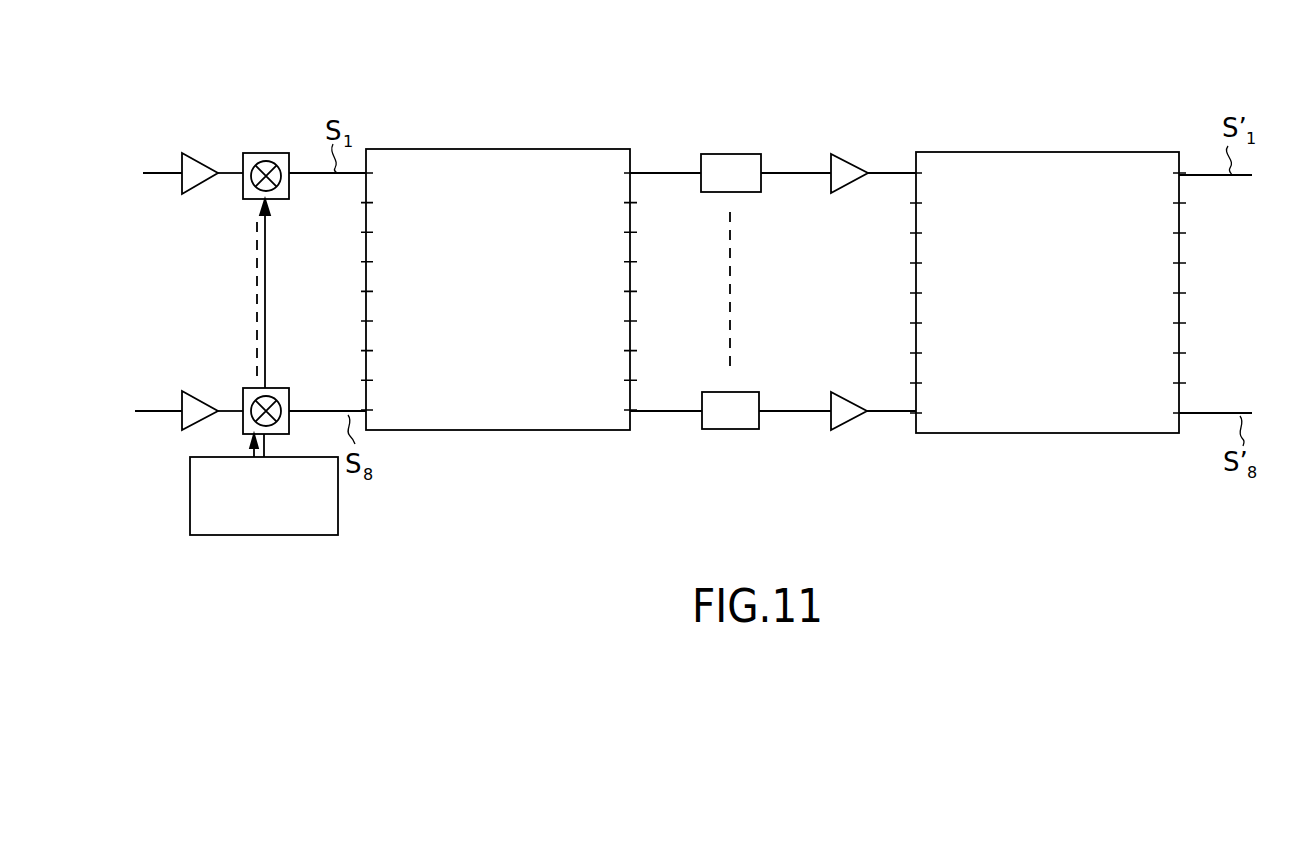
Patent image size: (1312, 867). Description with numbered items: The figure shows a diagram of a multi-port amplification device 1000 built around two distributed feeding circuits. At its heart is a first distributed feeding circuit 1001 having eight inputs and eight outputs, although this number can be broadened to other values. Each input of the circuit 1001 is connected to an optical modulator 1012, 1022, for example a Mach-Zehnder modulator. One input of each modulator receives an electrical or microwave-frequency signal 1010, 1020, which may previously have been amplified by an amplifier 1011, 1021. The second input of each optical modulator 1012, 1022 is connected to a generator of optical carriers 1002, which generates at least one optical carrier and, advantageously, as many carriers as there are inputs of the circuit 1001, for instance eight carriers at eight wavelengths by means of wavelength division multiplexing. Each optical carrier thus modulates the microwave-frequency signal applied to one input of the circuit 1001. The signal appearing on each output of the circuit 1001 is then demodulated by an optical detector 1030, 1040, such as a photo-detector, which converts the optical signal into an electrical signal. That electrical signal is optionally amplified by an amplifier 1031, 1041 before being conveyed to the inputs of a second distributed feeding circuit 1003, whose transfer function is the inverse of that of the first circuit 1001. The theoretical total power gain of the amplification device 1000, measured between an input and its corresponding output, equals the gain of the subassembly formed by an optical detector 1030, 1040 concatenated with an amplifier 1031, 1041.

The multi-port amplification device 1000 is at (1156, 74).
The first distributed feeding circuit 1001 is at (538, 297).
The generator of optical carriers 1002 is at (292, 508).
The second distributed feeding circuit 1003 is at (1088, 300).
The electrical or microwave-frequency signal 1010 is at (147, 172).
The amplifier 1011 is at (205, 168).
The optical modulator 1012 is at (272, 152).
The electrical or microwave-frequency signal 1020 is at (138, 409).
The amplifier 1021 is at (203, 406).
The optical modulator 1022 is at (282, 388).
The optical detector 1030 is at (732, 154).
The amplifier 1031 is at (854, 163).
The optical detector 1040 is at (726, 430).
The amplifier 1041 is at (848, 424).